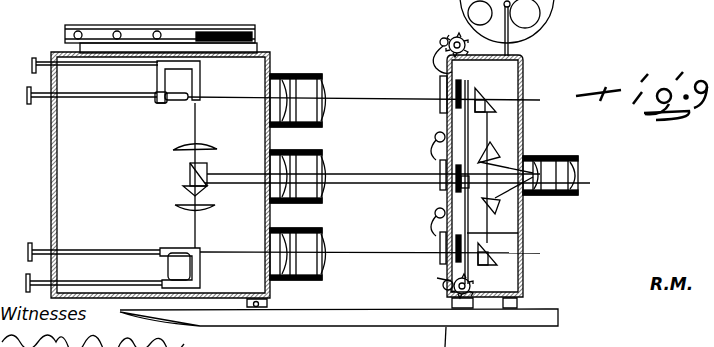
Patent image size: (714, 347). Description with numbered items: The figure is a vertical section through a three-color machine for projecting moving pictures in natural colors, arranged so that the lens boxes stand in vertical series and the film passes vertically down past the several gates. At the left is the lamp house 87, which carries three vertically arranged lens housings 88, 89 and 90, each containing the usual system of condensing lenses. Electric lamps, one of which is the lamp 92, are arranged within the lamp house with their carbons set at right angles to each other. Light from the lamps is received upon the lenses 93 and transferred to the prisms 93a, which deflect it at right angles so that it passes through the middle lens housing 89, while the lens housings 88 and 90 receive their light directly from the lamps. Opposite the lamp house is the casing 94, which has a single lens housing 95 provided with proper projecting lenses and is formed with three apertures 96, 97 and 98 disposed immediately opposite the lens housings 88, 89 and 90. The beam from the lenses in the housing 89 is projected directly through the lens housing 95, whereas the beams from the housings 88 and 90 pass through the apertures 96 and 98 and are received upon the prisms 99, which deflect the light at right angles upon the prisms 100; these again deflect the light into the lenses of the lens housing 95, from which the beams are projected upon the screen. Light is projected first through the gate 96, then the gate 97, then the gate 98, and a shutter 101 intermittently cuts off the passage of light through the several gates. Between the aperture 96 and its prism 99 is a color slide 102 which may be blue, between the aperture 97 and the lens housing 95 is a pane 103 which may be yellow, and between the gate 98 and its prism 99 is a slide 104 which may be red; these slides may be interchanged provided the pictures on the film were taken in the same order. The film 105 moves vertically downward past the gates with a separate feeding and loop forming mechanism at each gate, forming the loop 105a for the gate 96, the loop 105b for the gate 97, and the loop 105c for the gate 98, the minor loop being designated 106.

The lamp house 87 is at (160, 161).
The lens housing 88 is at (364, 89).
The middle lens housing 89 is at (397, 176).
The lens housing 90 is at (370, 254).
The electric lamp 92 is at (192, 275).
The lenses 93 is at (205, 145).
The prisms 93a is at (177, 179).
The casing 94 is at (523, 90).
The lens housing 95 is at (556, 157).
The aperture 96 is at (446, 100).
The aperture 97 is at (175, 79).
The aperture 98 is at (446, 260).
The prisms 99 is at (470, 100).
The prisms 100 is at (490, 143).
The shutter 101 is at (518, 233).
The color slide 102 is at (462, 89).
The pane 103 is at (464, 182).
The slide 104 is at (471, 284).
The film 105 is at (441, 42).
The loop 105a is at (446, 73).
The loop 105b is at (446, 143).
The loop 105c is at (447, 222).
The minor loop 106 is at (444, 288).